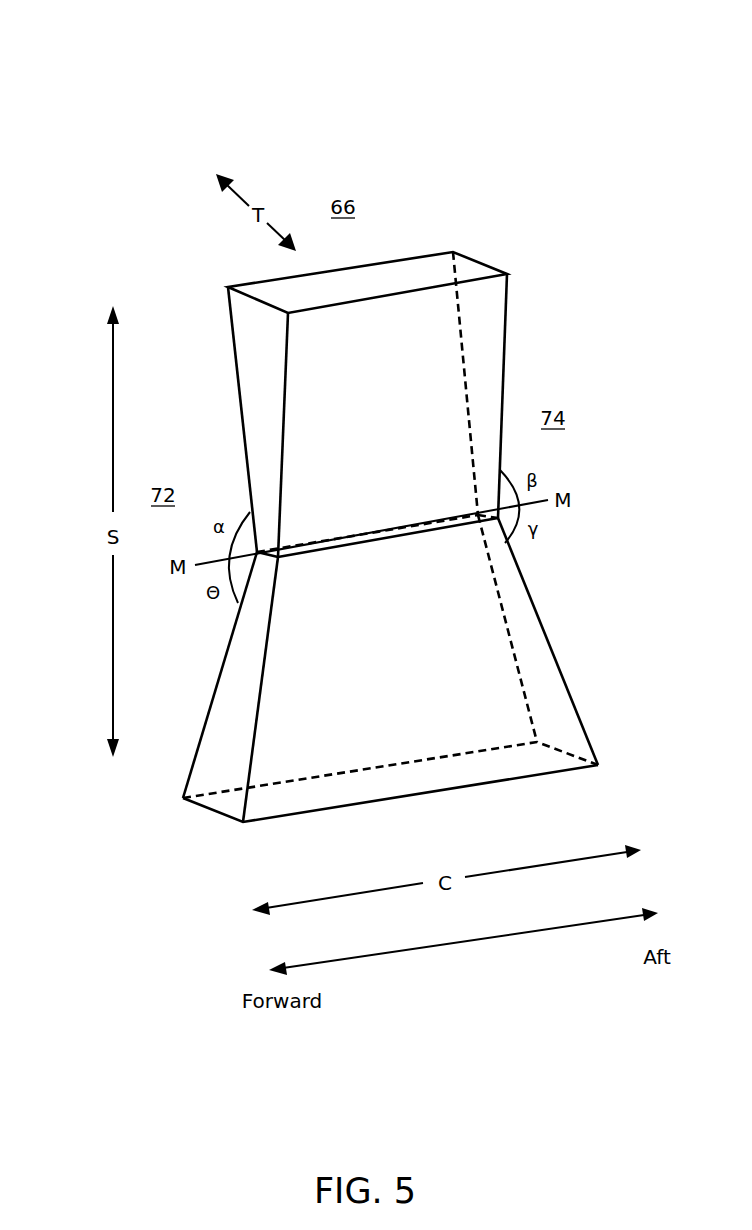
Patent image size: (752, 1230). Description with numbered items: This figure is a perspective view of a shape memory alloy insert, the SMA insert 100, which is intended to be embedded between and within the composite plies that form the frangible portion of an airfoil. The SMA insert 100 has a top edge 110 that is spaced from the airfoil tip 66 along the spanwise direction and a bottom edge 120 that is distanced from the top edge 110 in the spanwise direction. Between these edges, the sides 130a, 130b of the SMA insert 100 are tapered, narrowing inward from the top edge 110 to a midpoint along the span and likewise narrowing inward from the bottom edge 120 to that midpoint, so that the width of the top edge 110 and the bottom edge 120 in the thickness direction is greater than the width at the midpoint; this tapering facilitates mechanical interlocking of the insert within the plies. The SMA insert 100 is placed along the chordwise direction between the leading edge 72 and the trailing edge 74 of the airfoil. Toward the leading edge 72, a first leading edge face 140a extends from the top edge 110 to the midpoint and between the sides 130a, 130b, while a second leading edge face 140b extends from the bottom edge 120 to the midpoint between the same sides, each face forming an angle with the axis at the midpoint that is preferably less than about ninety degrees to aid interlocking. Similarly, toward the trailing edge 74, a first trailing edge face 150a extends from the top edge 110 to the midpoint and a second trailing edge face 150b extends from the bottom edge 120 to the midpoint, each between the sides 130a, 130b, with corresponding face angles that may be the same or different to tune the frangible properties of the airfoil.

The SMA insert 100 is at (256, 82).
The airfoil tip 66 is at (343, 209).
The leading edge 72 is at (163, 497).
The trailing edge 74 is at (553, 420).
The top edge 110 is at (434, 266).
The bottom edge 120 is at (548, 777).
The side 130a is at (508, 320).
The side 130b is at (228, 327).
The first leading edge face 140a is at (257, 400).
The second leading edge face 140b is at (210, 758).
The first trailing edge face 150a is at (475, 410).
The second trailing edge face 150b is at (555, 717).